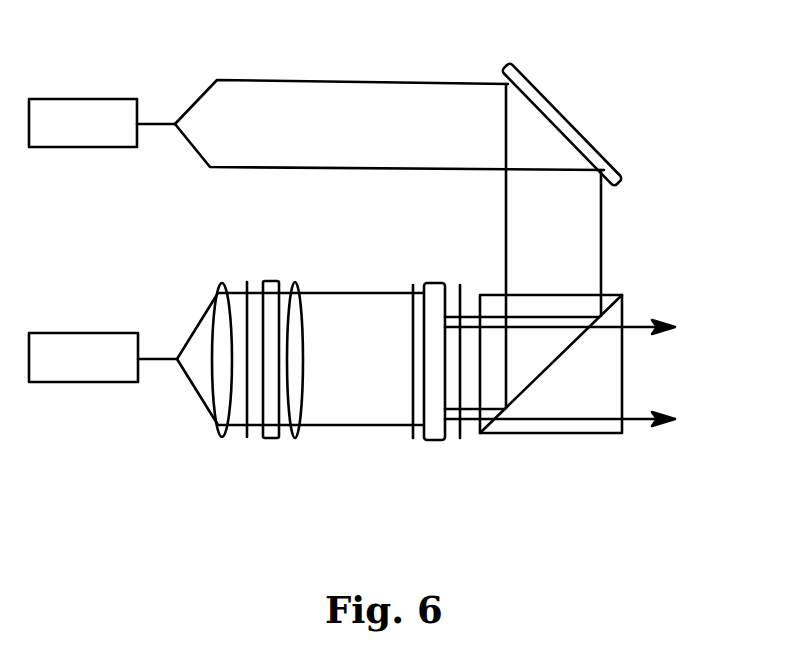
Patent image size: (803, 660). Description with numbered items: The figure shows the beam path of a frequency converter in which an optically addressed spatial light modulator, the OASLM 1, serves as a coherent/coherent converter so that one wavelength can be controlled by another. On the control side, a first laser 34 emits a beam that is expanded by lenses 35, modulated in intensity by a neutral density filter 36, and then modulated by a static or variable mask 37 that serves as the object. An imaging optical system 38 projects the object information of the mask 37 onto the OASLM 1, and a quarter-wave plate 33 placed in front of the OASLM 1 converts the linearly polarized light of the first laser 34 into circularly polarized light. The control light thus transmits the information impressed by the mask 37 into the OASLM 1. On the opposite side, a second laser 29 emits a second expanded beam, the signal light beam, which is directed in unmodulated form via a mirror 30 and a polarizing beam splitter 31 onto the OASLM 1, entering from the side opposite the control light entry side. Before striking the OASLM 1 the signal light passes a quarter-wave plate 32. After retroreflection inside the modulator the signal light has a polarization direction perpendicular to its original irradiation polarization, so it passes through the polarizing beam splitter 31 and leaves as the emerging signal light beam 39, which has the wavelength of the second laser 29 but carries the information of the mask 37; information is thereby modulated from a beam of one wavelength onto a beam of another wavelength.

The OASLM 1 is at (434, 462).
The second laser 29 is at (82, 96).
The mirror 30 is at (592, 130).
The polarizing beam splitter 31 is at (615, 283).
The λ/4 plate 32 is at (458, 452).
The λ/4 plate 33 is at (410, 450).
The first laser 34 is at (83, 330).
The lenses 35 is at (218, 273).
The neutral density filter 36 is at (245, 270).
The mask 37 is at (270, 272).
The imaging optical system 38 is at (296, 277).
The signal light beam 39 is at (585, 373).